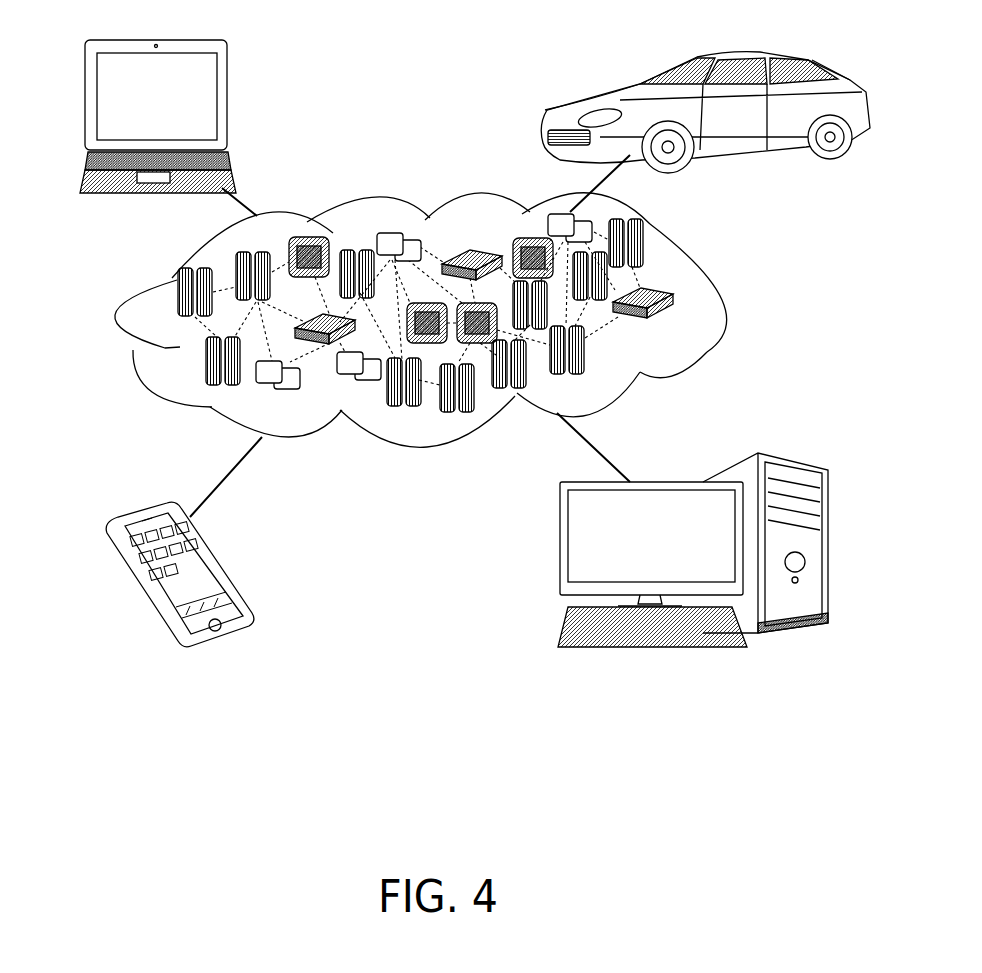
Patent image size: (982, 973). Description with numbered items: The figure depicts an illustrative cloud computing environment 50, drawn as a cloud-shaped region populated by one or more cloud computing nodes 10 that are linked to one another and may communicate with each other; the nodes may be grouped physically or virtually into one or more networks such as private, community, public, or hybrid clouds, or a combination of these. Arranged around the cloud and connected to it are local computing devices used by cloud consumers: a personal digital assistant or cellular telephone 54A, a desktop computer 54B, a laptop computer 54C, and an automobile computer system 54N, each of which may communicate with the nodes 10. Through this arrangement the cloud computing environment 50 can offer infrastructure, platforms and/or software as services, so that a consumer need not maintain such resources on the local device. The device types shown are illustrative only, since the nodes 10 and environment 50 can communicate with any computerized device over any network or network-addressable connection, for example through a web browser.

The cloud computing node 10 is at (669, 312).
The cloud computing environment 50 is at (720, 300).
The personal digital assistant or cellular telephone 54A is at (203, 567).
The desktop computer 54B is at (733, 465).
The laptop computer 54C is at (207, 112).
The automobile computer system 54N is at (543, 120).